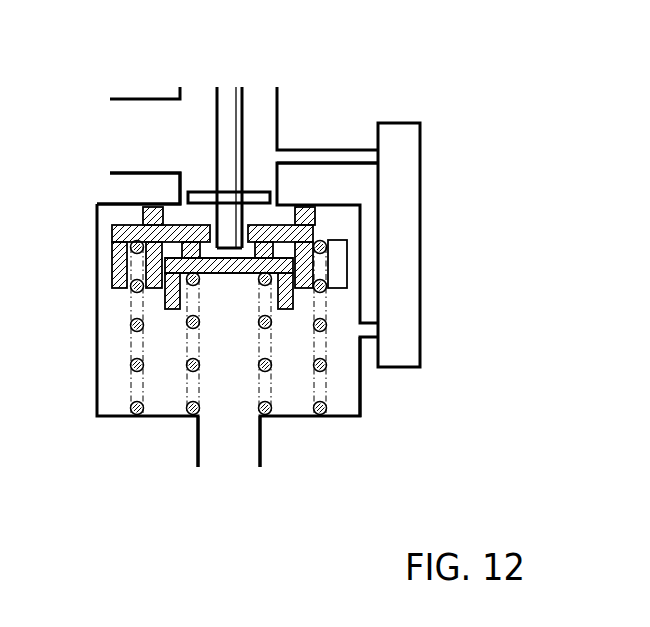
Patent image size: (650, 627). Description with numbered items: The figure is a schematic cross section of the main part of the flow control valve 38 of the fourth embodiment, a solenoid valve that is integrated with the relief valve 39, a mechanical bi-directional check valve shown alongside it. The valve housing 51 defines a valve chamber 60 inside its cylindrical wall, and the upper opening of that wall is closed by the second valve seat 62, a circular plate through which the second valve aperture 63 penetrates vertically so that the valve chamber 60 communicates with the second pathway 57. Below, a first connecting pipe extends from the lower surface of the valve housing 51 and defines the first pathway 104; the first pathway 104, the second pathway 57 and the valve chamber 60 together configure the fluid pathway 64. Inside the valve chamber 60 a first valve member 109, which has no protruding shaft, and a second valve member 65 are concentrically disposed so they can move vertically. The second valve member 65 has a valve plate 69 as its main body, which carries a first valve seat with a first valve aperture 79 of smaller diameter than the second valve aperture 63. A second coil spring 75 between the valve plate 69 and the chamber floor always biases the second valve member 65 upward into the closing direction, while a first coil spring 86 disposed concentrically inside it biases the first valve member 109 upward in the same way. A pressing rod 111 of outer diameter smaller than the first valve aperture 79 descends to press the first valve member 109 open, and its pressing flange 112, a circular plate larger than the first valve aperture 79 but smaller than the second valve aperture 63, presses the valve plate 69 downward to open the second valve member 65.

The flow control valve 38 is at (295, 68).
The relief valve 39 is at (424, 153).
The valve housing 51 is at (364, 383).
The second pathway 57 is at (143, 115).
The valve chamber 60 is at (107, 378).
The second valve seat 62 is at (123, 203).
The second valve aperture 63 is at (193, 182).
The fluid pathway 64 is at (235, 440).
The second valve member 65 is at (108, 253).
The valve plate 69 is at (258, 233).
The second coil spring 75 is at (130, 325).
The first valve aperture 79 is at (256, 268).
The first coil spring 86 is at (185, 372).
The first pathway 104 is at (248, 447).
The first valve member 109 is at (224, 280).
The pressing rod 111 is at (240, 115).
The pressing flange 112 is at (252, 196).